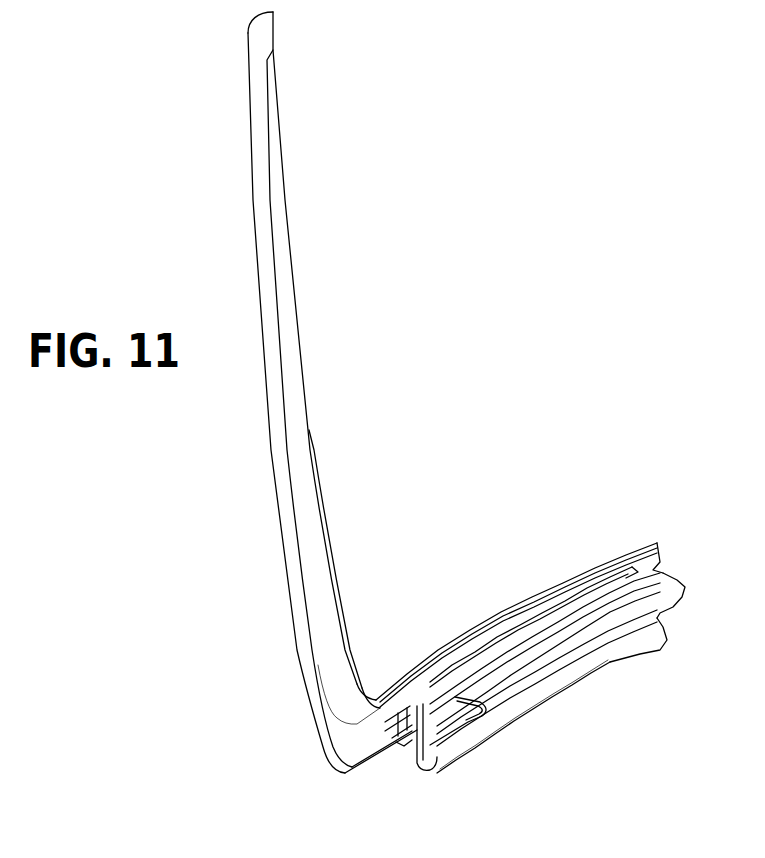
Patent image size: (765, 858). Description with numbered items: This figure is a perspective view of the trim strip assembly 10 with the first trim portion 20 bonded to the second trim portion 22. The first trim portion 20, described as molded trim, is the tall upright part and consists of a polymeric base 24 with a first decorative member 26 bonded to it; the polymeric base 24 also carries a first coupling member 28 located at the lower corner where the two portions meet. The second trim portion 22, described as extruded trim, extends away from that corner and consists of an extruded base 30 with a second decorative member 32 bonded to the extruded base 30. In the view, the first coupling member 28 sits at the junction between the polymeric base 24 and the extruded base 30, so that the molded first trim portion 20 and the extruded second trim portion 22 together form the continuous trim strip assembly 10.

The trim strip assembly 10 is at (515, 349).
The first trim portion 20 is at (288, 587).
The second trim portion 22 is at (582, 574).
The polymeric base 24 is at (352, 753).
The first decorative member 26 is at (275, 473).
The first coupling member 28 is at (410, 708).
The extruded base 30 is at (562, 678).
The second decorative member 32 is at (481, 625).